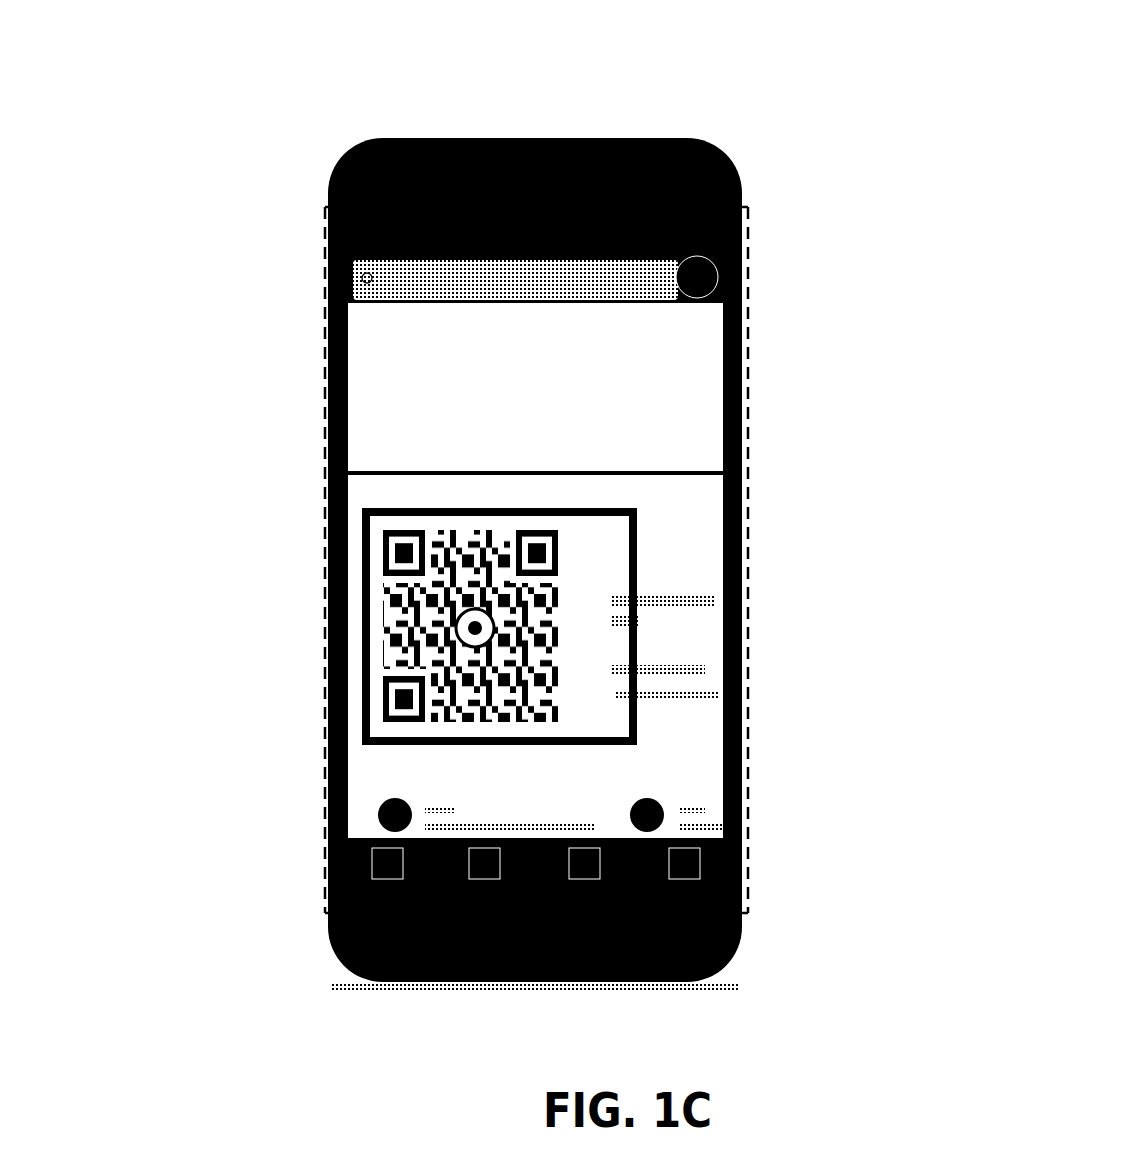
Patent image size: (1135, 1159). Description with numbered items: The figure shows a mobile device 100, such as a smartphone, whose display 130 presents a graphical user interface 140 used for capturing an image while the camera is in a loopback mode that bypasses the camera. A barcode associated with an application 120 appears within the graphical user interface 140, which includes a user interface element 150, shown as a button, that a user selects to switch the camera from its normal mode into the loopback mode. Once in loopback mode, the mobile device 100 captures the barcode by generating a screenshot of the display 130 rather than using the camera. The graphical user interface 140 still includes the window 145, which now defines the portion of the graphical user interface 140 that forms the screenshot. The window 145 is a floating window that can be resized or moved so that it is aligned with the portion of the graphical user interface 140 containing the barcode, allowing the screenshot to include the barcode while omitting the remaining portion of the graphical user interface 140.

The mobile device 100 is at (634, 98).
The application 120 is at (355, 343).
The display 130 is at (320, 440).
The graphical user interface 140 is at (325, 212).
The window 145 is at (633, 635).
The user interface element 150 is at (960, 250).